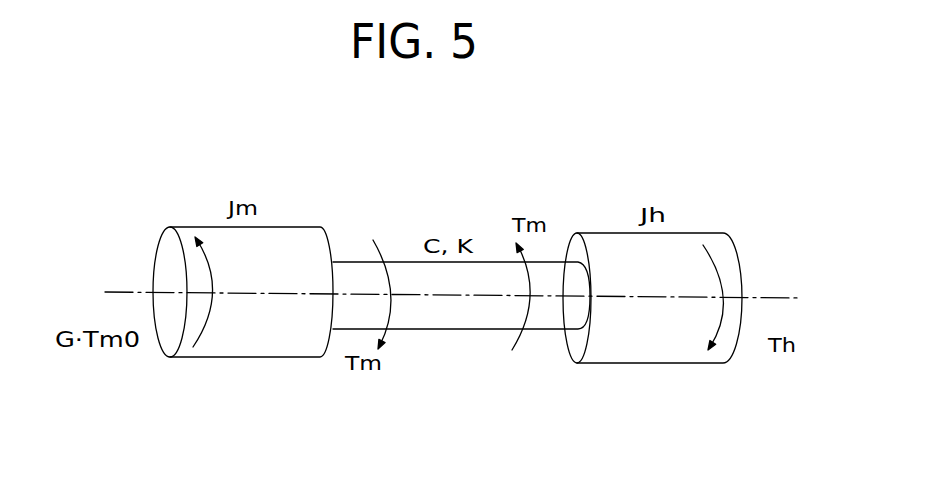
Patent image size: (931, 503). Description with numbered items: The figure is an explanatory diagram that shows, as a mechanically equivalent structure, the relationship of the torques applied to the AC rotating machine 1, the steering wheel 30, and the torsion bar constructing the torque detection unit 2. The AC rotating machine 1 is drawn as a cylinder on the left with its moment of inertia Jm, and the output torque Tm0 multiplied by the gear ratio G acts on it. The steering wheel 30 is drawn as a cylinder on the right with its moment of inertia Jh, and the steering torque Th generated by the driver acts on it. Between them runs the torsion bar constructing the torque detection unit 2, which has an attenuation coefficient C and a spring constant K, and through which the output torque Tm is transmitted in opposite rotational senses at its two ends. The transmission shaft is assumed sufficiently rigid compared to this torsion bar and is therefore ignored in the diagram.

The AC rotating machine 1 is at (242, 357).
The torque detection unit 2 is at (490, 328).
The steering wheel 30 is at (653, 363).